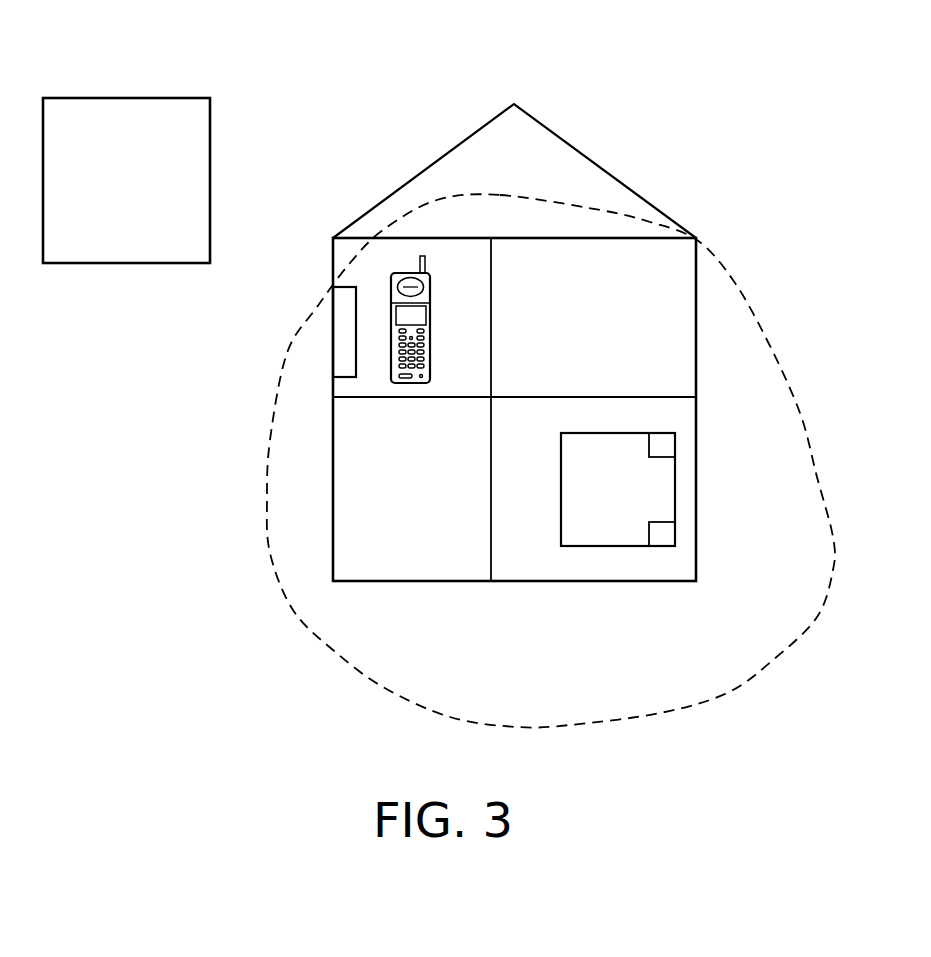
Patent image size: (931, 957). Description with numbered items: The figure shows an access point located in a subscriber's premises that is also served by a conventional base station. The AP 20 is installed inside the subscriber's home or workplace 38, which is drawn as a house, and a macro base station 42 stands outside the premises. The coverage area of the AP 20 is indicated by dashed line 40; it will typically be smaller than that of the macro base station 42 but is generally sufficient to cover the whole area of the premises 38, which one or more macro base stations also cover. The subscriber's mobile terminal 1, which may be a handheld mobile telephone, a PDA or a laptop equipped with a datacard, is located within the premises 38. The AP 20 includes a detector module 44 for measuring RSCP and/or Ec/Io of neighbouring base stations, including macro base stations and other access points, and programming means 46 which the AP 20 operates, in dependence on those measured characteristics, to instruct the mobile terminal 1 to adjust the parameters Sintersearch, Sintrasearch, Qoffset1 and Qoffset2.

The macro base station 42 is at (64, 98).
The subscriber's home or workplace 38 is at (573, 143).
The mobile terminal 1 is at (414, 385).
The access point 20 is at (675, 488).
The detector module 44 is at (658, 433).
The programming means 46 is at (658, 547).
The coverage area 40 is at (554, 731).